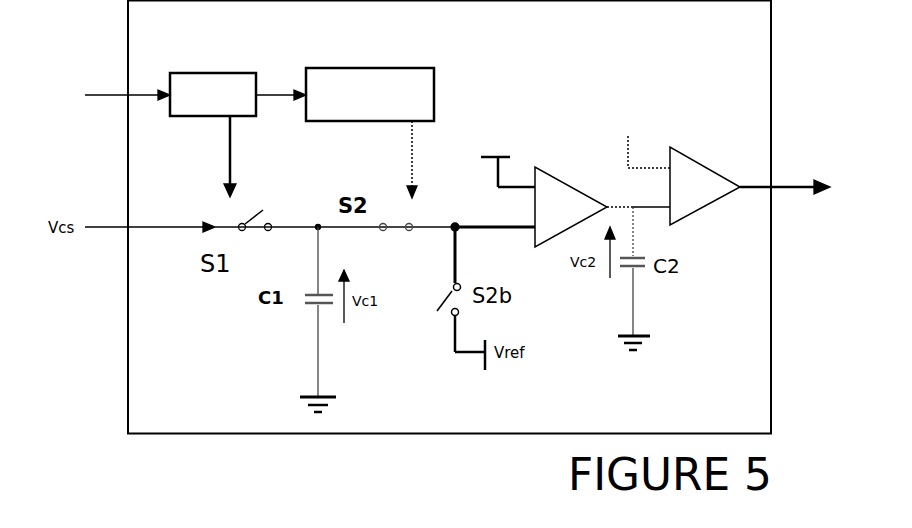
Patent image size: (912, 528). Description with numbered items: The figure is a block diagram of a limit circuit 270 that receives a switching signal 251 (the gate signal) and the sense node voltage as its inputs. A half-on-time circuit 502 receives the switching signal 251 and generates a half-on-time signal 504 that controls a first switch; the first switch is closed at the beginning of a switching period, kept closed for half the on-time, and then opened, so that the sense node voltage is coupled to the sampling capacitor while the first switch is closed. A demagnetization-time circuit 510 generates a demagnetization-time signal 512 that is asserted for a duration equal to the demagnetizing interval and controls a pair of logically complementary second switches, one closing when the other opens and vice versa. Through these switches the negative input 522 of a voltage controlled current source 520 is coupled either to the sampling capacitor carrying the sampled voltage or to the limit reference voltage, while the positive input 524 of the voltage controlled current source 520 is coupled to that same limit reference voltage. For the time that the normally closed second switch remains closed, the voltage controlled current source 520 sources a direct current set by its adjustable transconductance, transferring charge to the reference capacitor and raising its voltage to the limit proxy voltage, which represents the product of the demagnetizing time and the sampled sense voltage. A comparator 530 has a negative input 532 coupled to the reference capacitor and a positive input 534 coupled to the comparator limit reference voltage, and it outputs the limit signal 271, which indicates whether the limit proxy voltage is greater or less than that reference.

The switching signal 251 is at (106, 93).
The Ton/2 circuit 502 is at (216, 118).
The Ton/2 signal 504 is at (233, 158).
The Tdem circuit 510 is at (340, 123).
The Tdem signal 512 is at (415, 167).
The voltage controlled current source 520 is at (562, 207).
The negative input of voltage controlled current source 522 is at (516, 232).
The positive input of voltage controlled current source 524 is at (510, 190).
The comparator 530 is at (692, 186).
The negative input of comparator 532 is at (655, 200).
The positive input of comparator 534 is at (628, 161).
The limit signal 271 is at (763, 192).
The limit circuit 270 is at (449, 217).